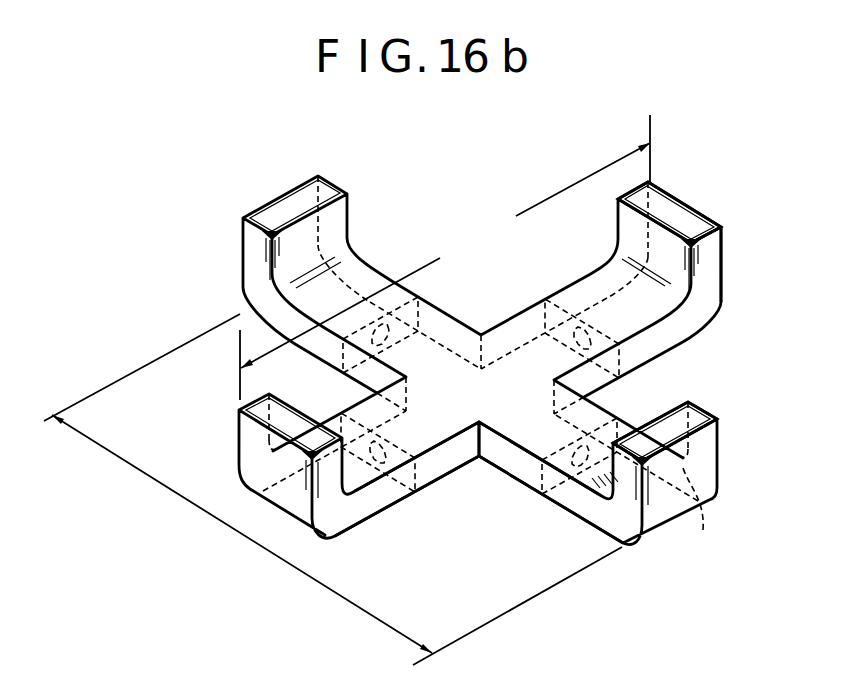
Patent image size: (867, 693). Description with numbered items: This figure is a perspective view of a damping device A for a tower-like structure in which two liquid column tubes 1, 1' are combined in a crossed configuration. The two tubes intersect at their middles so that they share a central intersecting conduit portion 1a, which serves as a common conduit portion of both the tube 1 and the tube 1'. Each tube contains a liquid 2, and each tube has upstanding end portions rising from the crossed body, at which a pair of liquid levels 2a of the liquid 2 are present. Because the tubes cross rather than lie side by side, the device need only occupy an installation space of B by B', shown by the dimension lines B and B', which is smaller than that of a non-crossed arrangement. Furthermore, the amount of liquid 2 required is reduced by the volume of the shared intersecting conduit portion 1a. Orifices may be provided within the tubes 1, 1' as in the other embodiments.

The liquid column tube 1 is at (676, 414).
The liquid column tube 1' is at (669, 181).
The central intersecting conduit portion 1a is at (488, 383).
The liquid 2 is at (262, 243).
The liquid level 2a is at (701, 517).
The damping device A is at (735, 225).
The installation space dimension B is at (333, 489).
The installation space dimension B' is at (445, 257).